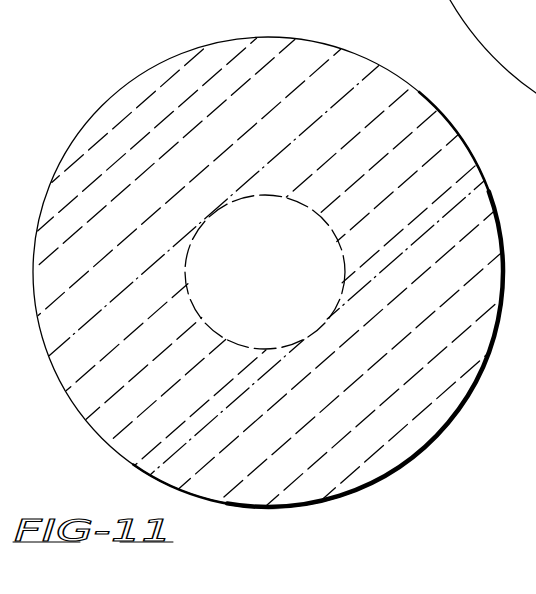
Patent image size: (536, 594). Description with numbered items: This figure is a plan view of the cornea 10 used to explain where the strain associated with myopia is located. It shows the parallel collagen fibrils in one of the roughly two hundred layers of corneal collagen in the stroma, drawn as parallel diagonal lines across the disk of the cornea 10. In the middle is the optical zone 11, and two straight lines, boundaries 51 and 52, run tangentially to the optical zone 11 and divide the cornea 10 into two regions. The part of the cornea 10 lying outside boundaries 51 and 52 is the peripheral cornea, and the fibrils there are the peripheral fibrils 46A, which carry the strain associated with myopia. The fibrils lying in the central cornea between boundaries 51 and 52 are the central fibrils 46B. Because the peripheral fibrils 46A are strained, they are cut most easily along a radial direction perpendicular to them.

The cornea 10 is at (145, 57).
The optical zone 11 is at (199, 299).
The peripheral fibrils 46A is at (125, 153).
The central fibrils 46B is at (380, 164).
The boundary 51 is at (307, 124).
The boundary 52 is at (406, 266).